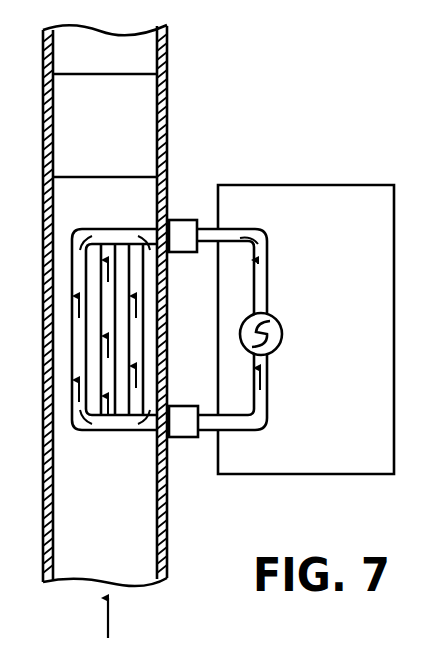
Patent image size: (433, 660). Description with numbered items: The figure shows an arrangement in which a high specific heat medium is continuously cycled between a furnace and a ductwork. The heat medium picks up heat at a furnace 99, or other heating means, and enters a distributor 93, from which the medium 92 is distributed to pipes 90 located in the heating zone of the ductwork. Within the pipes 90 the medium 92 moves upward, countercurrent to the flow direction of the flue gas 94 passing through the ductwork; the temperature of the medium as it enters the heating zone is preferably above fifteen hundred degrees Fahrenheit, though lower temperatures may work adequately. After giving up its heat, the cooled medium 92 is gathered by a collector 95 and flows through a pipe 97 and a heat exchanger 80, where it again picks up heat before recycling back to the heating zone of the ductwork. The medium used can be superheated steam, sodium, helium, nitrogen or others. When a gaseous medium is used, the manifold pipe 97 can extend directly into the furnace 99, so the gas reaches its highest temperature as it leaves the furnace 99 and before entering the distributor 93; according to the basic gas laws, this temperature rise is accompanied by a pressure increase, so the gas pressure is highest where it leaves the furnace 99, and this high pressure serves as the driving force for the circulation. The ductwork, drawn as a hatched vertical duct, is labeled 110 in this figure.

The duct 110 is at (124, 138).
The pipes 90 is at (126, 229).
The collector 95 is at (187, 220).
The medium 92 is at (264, 238).
The pipe 97 is at (262, 288).
The heat exchanger 80 is at (284, 330).
The furnace 99 is at (370, 375).
The distributor 93 is at (188, 437).
The flue gas 94 is at (108, 600).